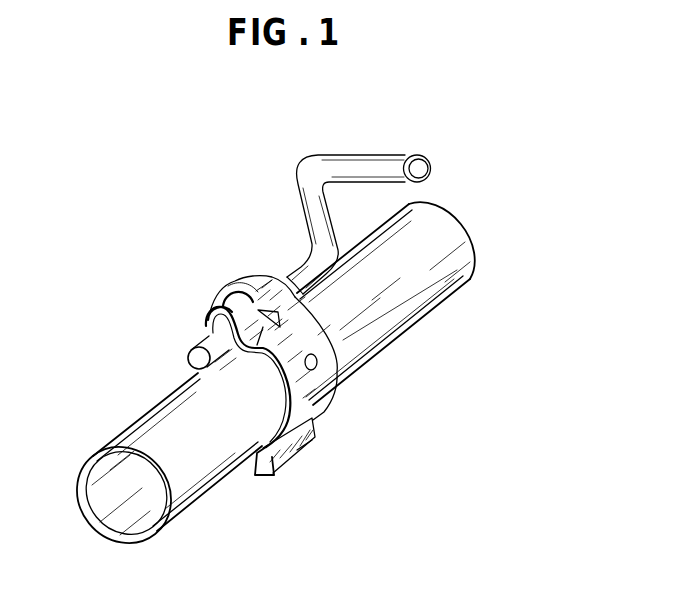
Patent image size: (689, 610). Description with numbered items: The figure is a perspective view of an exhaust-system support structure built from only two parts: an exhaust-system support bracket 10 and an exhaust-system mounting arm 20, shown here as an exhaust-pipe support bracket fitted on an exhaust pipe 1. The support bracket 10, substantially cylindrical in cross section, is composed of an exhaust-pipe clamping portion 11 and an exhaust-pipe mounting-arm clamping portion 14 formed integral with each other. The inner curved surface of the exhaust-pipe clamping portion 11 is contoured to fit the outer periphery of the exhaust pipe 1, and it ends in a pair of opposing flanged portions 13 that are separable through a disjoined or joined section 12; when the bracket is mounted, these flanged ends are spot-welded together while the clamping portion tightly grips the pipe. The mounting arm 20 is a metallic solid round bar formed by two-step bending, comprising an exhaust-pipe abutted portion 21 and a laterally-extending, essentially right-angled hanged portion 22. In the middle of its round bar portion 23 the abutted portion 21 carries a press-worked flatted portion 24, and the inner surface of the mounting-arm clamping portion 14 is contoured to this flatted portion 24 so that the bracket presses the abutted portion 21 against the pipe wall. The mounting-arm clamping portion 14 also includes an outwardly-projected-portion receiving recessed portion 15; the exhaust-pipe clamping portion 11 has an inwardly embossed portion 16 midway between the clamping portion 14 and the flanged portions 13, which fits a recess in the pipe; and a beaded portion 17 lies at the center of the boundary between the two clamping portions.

The exhaust pipe 1 is at (140, 424).
The exhaust-system support bracket 10 is at (333, 362).
The exhaust-pipe clamping portion 11 is at (330, 393).
The disjoined or joined section 12 is at (270, 480).
The flanged portion 13 is at (253, 472).
The exhaust-pipe mounting-arm clamping portion 14 is at (223, 303).
The outwardly-projected-portion receiving recessed portion 15 is at (240, 280).
The inwardly embossed portion 16 is at (317, 368).
The beaded portion 17 is at (257, 345).
The exhaust-system mounting arm 20 is at (300, 172).
The exhaust-pipe abutted portion 21 is at (325, 272).
The hanged portion 22 is at (383, 163).
The round bar portion 23 is at (293, 268).
The flatted portion 24 is at (207, 324).